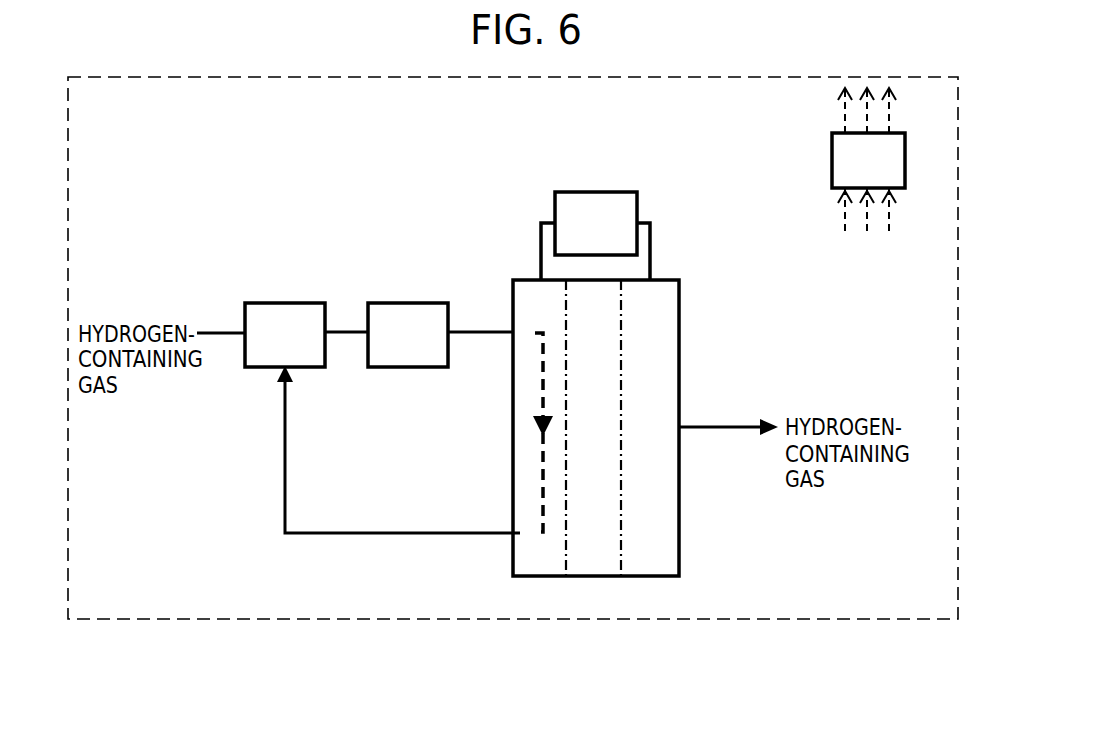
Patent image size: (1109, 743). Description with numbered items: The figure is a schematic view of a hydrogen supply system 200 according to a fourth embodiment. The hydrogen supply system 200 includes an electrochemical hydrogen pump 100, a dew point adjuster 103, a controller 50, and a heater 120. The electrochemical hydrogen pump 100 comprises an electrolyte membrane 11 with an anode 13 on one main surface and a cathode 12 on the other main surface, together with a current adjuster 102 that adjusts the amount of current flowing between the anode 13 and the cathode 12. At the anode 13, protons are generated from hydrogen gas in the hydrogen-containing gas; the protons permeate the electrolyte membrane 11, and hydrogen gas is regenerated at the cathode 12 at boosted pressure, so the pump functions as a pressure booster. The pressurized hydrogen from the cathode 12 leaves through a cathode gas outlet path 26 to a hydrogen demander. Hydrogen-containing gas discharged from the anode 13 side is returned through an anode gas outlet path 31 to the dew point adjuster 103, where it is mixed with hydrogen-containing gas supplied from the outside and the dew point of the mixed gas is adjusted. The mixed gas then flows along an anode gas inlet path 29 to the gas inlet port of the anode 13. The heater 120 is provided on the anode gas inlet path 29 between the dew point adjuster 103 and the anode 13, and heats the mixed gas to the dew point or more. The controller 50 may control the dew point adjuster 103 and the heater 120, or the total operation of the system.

The hydrogen supply system 200 is at (452, 180).
The electrochemical hydrogen pump 100 is at (627, 376).
The current adjuster 102 is at (568, 243).
The dew point adjuster 103 is at (258, 352).
The heater 120 is at (381, 352).
The anode gas inlet path 29 is at (470, 330).
The anode 13 is at (560, 318).
The electrolyte membrane 11 is at (612, 318).
The cathode 12 is at (665, 318).
The cathode gas outlet path 26 is at (718, 422).
The anode gas outlet path 31 is at (413, 540).
The controller 50 is at (887, 177).